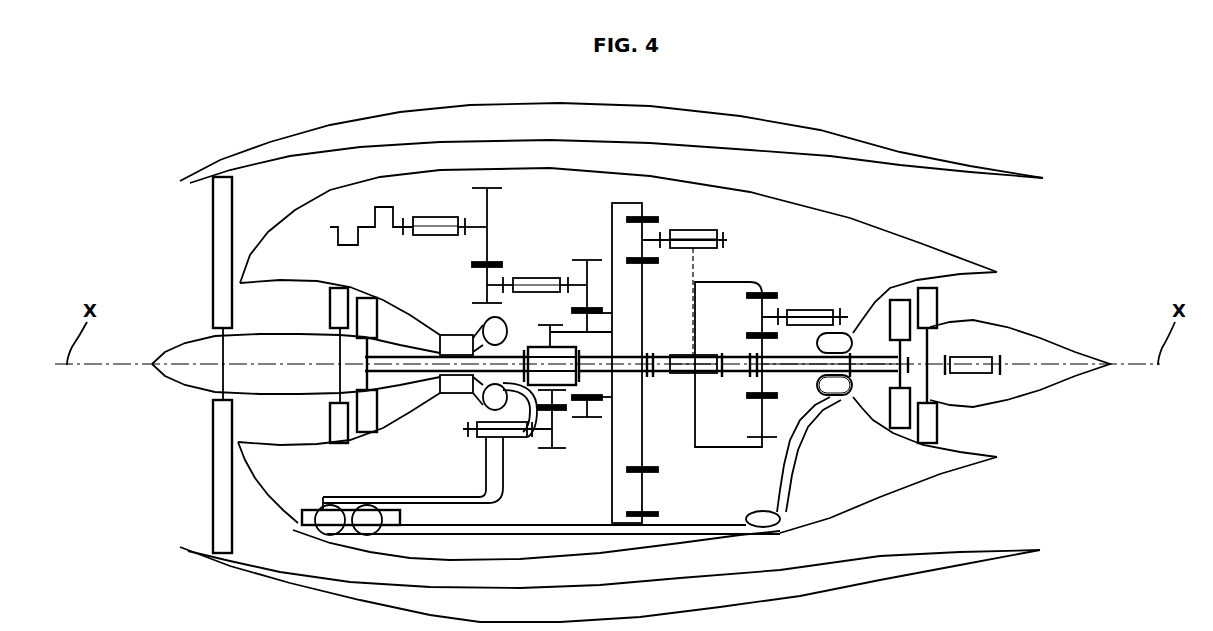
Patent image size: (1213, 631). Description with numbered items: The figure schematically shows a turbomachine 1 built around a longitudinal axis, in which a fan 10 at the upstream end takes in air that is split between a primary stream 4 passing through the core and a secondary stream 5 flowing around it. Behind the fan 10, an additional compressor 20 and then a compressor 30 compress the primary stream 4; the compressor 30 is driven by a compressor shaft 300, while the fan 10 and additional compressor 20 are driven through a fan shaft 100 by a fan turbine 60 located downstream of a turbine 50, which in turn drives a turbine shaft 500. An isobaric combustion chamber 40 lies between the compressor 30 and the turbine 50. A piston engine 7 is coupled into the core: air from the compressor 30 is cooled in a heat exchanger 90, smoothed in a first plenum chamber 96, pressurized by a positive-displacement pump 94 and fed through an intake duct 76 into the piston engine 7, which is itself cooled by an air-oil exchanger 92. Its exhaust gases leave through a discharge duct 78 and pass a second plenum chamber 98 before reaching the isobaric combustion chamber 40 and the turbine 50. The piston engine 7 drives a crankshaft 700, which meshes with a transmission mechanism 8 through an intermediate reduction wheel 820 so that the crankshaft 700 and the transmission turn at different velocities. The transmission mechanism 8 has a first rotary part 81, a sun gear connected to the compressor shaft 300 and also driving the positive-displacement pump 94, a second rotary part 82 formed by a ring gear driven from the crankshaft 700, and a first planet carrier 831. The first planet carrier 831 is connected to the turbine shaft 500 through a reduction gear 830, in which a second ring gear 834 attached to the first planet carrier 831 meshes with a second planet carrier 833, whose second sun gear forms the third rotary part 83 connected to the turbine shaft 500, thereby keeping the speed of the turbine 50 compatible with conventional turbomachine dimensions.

The turbomachine 1 is at (793, 91).
The primary stream 4 is at (299, 317).
The secondary stream 5 is at (325, 177).
The piston engine 7 is at (322, 503).
The transmission mechanism 8 is at (697, 477).
The fan 10 is at (213, 468).
The additional compressor 20 is at (337, 308).
The compressor 30 is at (378, 315).
The isobaric combustion chamber 40 is at (840, 398).
The turbine 50 is at (900, 312).
The fan turbine 60 is at (937, 303).
The intake duct 76 is at (503, 468).
The discharge duct 78 is at (560, 525).
The first rotary part 81 is at (580, 346).
The second rotary part 82 is at (612, 233).
The third rotary part 83 is at (762, 397).
The heat exchanger 90 is at (457, 328).
The air-oil exchanger 92 is at (297, 521).
The positive-displacement pump 94 is at (464, 429).
The first plenum chamber 96 is at (473, 418).
The second plenum chamber 98 is at (748, 506).
The fan shaft 100 is at (298, 362).
The compressor shaft 300 is at (511, 350).
The turbine shaft 500 is at (793, 370).
The crankshaft 700 is at (347, 210).
The intermediate reduction wheel 820 is at (470, 282).
The reduction gear 830 is at (783, 281).
The first planet carrier 831 is at (692, 268).
The second planet carrier 833 is at (760, 307).
The second ring gear 834 is at (733, 277).